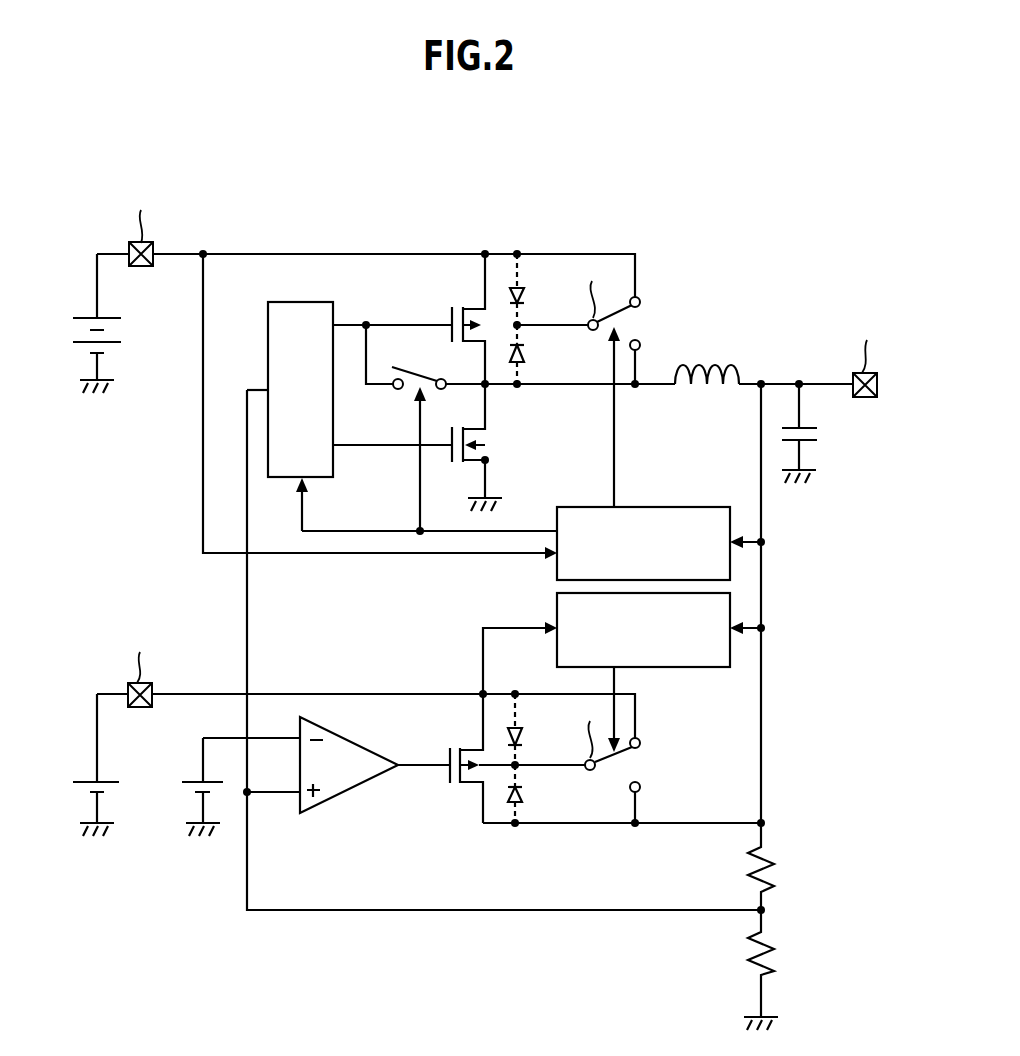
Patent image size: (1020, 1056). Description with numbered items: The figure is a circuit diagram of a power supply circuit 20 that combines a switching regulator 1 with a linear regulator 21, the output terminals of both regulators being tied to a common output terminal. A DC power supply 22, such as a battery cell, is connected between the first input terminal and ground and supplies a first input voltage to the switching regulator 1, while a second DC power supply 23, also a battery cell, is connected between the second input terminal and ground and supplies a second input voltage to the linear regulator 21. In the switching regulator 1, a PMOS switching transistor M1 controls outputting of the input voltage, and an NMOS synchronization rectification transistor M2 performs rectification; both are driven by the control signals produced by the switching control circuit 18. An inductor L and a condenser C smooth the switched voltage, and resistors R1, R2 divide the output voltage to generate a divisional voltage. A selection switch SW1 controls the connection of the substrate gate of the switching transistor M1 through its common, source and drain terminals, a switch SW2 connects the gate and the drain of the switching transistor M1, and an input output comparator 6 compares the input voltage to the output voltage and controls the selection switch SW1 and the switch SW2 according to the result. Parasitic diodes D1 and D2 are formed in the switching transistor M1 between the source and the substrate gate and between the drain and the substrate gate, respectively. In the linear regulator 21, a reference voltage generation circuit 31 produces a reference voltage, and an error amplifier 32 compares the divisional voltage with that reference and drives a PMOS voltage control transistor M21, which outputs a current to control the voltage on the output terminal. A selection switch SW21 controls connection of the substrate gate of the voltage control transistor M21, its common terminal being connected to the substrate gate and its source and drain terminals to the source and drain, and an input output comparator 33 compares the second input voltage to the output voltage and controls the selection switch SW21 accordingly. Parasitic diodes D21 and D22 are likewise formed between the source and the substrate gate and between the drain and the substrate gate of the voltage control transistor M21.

The switching regulator 1 is at (676, 254).
The input output comparator 6 is at (656, 507).
The switching control circuit 18 is at (268, 318).
The power supply circuit 20 is at (781, 214).
The linear regulator 21 is at (358, 646).
The DC power supply 22 is at (88, 316).
The DC power supply 23 is at (85, 777).
The reference voltage generation circuit 31 is at (188, 793).
The error amplifier 32 is at (358, 786).
The input output comparator 33 is at (557, 597).
The switching transistor M1 is at (466, 319).
The synchronization rectification transistor M2 is at (474, 447).
The parasitic diode D1 is at (535, 289).
The parasitic diode D2 is at (535, 354).
The selection switch SW1 is at (630, 325).
The switch SW2 is at (454, 367).
The inductor L is at (707, 396).
The condenser C is at (806, 433).
The voltage control transistor M21 is at (458, 758).
The parasitic diode D21 is at (537, 729).
The parasitic diode D22 is at (537, 794).
The selection switch SW21 is at (628, 763).
The resistor R1 is at (778, 866).
The resistor R2 is at (776, 970).